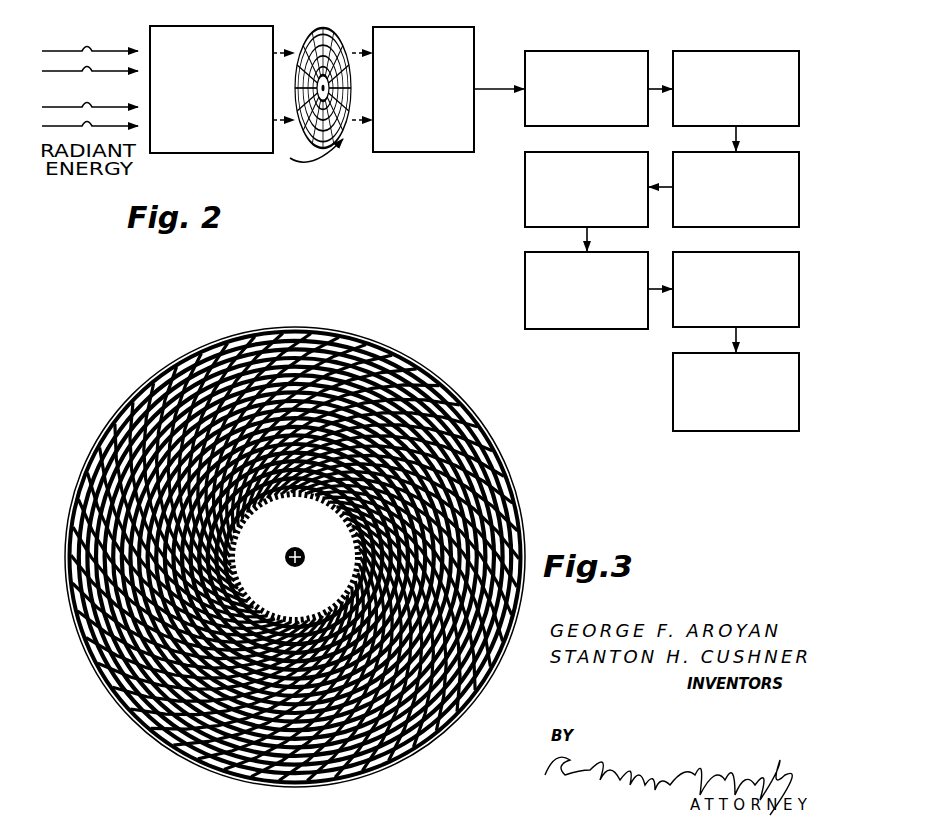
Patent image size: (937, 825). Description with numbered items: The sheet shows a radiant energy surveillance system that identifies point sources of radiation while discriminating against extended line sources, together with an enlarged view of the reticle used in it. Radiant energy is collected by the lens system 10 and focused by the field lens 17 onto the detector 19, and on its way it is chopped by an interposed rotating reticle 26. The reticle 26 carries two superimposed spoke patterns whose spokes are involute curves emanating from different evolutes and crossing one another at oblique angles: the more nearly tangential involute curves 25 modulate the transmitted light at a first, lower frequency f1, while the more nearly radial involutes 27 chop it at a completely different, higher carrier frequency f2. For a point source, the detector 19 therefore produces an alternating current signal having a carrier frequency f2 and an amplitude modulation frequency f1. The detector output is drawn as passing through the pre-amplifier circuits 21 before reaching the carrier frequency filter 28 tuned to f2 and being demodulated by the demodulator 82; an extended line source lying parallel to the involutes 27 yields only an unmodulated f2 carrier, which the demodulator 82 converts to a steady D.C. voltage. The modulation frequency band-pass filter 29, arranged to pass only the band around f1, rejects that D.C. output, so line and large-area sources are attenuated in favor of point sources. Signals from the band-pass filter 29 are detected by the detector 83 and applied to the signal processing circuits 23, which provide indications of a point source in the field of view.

In FIG. 2, the lens system 10 is at (235, 26).
In FIG. 2, the reticle 26 is at (329, 28).
In FIG. 3, the reticle 26 is at (127, 396).
In FIG. 2, the field lens 17 is at (442, 28).
In FIG. 2, the detector 19 is at (610, 50).
In FIG. 2, the pre-amplifier circuits 21 is at (762, 50).
In FIG. 2, the carrier frequency filter 28 is at (762, 152).
In FIG. 2, the demodulator 82 is at (610, 152).
In FIG. 2, the modulation frequency band-pass filter 29 is at (612, 253).
In FIG. 2, the detector 83 is at (762, 253).
In FIG. 2, the signal processing circuits 23 is at (764, 354).
In FIG. 3, the more nearly radial involutes 27 is at (278, 495).
In FIG. 3, the more nearly tangential involute curves 25 is at (254, 604).